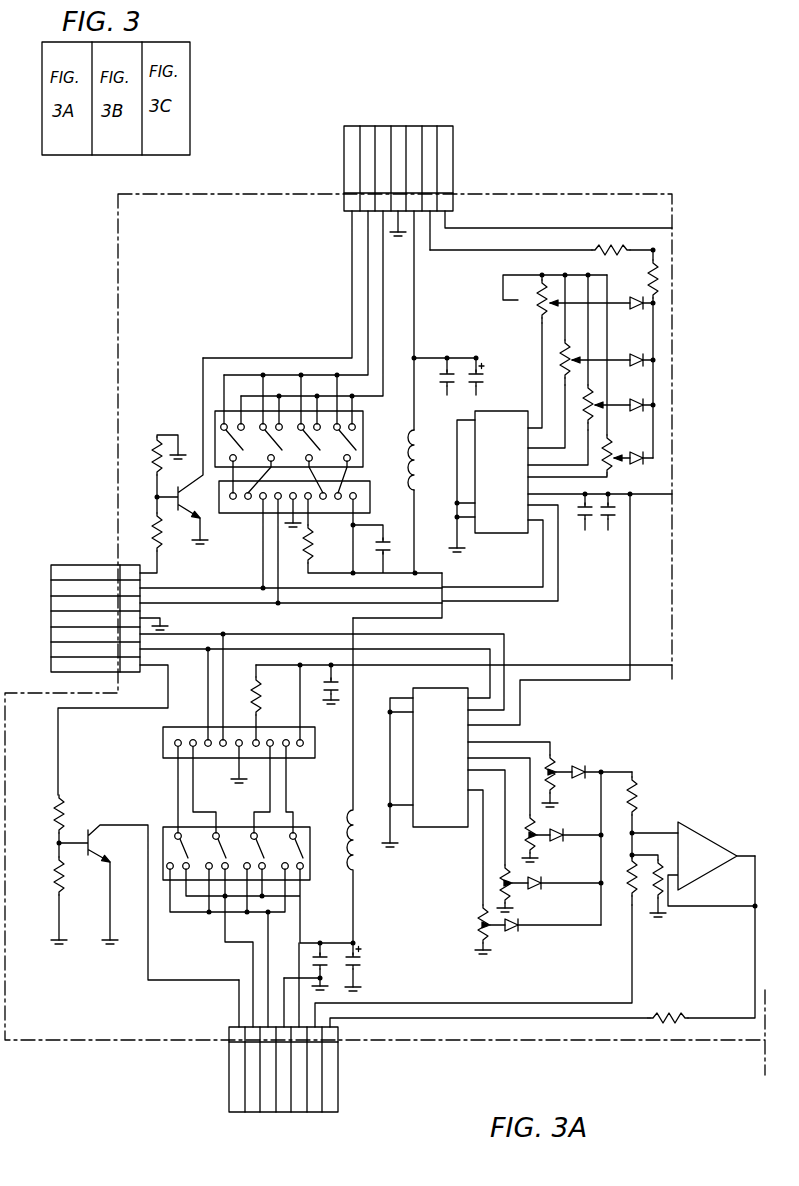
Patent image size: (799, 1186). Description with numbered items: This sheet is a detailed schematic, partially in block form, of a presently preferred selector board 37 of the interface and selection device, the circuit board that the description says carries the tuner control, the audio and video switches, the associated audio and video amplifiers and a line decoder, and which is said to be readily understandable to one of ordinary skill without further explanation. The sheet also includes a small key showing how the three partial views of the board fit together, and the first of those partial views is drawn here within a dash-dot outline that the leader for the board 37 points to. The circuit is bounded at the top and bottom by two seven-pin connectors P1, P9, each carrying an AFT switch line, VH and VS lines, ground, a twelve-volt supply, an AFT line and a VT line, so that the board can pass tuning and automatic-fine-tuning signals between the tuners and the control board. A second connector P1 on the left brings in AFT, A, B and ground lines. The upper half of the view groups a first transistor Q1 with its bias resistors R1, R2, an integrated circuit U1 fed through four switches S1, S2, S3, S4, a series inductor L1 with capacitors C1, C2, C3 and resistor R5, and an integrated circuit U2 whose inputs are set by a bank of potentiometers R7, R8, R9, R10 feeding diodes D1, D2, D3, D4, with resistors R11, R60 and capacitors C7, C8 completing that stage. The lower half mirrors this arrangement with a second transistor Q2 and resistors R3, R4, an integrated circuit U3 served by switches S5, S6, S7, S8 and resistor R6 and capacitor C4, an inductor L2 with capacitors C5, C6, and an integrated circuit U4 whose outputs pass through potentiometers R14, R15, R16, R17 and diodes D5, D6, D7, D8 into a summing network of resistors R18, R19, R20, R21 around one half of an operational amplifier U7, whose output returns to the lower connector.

The selector board 37 is at (515, 1045).
The connector P1 is at (389, 183).
The connector P9 is at (269, 1060).
The transistor 2N2222 Q1 is at (198, 478).
The transistor 2N2222 Q2 is at (149, 884).
The integrated circuit LA7910 U1 is at (292, 522).
The integrated circuit SL471 U2 is at (509, 472).
The integrated circuit LA7910 U3 is at (209, 733).
The integrated circuit SL471 U4 is at (442, 757).
The operational amplifier LM1558 U7 is at (711, 839).
The inductor L1 is at (401, 462).
The inductor L2 is at (364, 780).
The resistor R1 is at (154, 466).
The resistor R2 is at (142, 535).
The resistor R3 is at (38, 817).
The resistor R4 is at (40, 893).
The resistor R5 is at (324, 534).
The resistor R6 is at (273, 702).
The potentiometer R7 is at (516, 310).
The potentiometer R8 is at (557, 330).
The potentiometer R9 is at (580, 352).
The potentiometer R10 is at (620, 375).
The resistor R11 is at (639, 276).
The potentiometer R14 is at (589, 757).
The potentiometer R15 is at (530, 838).
The potentiometer R16 is at (505, 888).
The potentiometer R17 is at (467, 929).
The resistor R18 is at (621, 802).
The resistor R19 is at (624, 880).
The resistor R20 is at (652, 895).
The resistor R21 is at (701, 939).
The resistor R60 is at (541, 243).
The capacitor C1 is at (392, 533).
The capacitor C2 is at (438, 358).
The capacitor C3 is at (493, 384).
The capacitor C4 is at (321, 686).
The capacitor C5 is at (306, 957).
The capacitor C6 is at (371, 970).
The capacitor C7 is at (576, 541).
The capacitor C8 is at (609, 533).
The diode D1 is at (601, 312).
The diode D2 is at (612, 369).
The diode D3 is at (624, 414).
The diode D4 is at (634, 467).
The diode D5 is at (590, 782).
The diode D6 is at (565, 845).
The diode D7 is at (552, 892).
The diode D8 is at (541, 935).
The switch S1 is at (237, 443).
The switch S2 is at (275, 443).
The switch S3 is at (313, 443).
The switch S4 is at (357, 445).
The switch S5 is at (184, 851).
The switch S6 is at (222, 851).
The switch S7 is at (261, 851).
The switch S8 is at (300, 850).